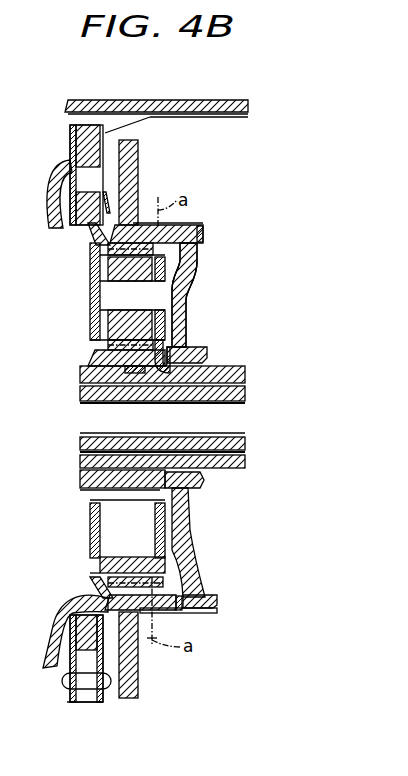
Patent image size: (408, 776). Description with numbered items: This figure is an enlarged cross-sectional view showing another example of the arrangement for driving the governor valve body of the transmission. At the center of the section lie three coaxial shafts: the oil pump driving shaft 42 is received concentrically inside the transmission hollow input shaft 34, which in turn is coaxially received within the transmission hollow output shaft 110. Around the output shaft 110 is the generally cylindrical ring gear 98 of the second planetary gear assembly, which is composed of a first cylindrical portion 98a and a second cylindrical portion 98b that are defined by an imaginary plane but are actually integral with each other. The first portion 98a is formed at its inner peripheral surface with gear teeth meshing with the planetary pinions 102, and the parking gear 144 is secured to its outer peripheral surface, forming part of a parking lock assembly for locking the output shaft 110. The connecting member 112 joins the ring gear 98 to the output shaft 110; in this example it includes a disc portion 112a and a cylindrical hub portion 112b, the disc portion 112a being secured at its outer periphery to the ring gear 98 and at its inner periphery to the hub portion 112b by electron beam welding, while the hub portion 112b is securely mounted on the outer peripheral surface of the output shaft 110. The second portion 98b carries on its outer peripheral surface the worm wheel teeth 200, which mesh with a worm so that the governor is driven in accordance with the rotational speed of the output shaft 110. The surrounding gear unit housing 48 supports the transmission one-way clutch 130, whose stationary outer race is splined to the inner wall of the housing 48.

The gear unit housing 48 is at (108, 99).
The parking gear 144 is at (137, 124).
The transmission one-way clutch 130 is at (69, 157).
The first cylindrical portion 98a is at (143, 222).
The worm wheel teeth 200 is at (190, 223).
The second cylindrical portion 98b is at (206, 234).
The ring gear 98 is at (196, 251).
The disc portion 112a is at (196, 283).
The connecting member 112 is at (190, 313).
The cylindrical hub portion 112b is at (205, 351).
The transmission hollow output shaft 110 is at (242, 375).
The transmission hollow input shaft 34 is at (237, 391).
The oil pump driving shaft 42 is at (230, 417).
The planetary pinions 102 is at (112, 270).